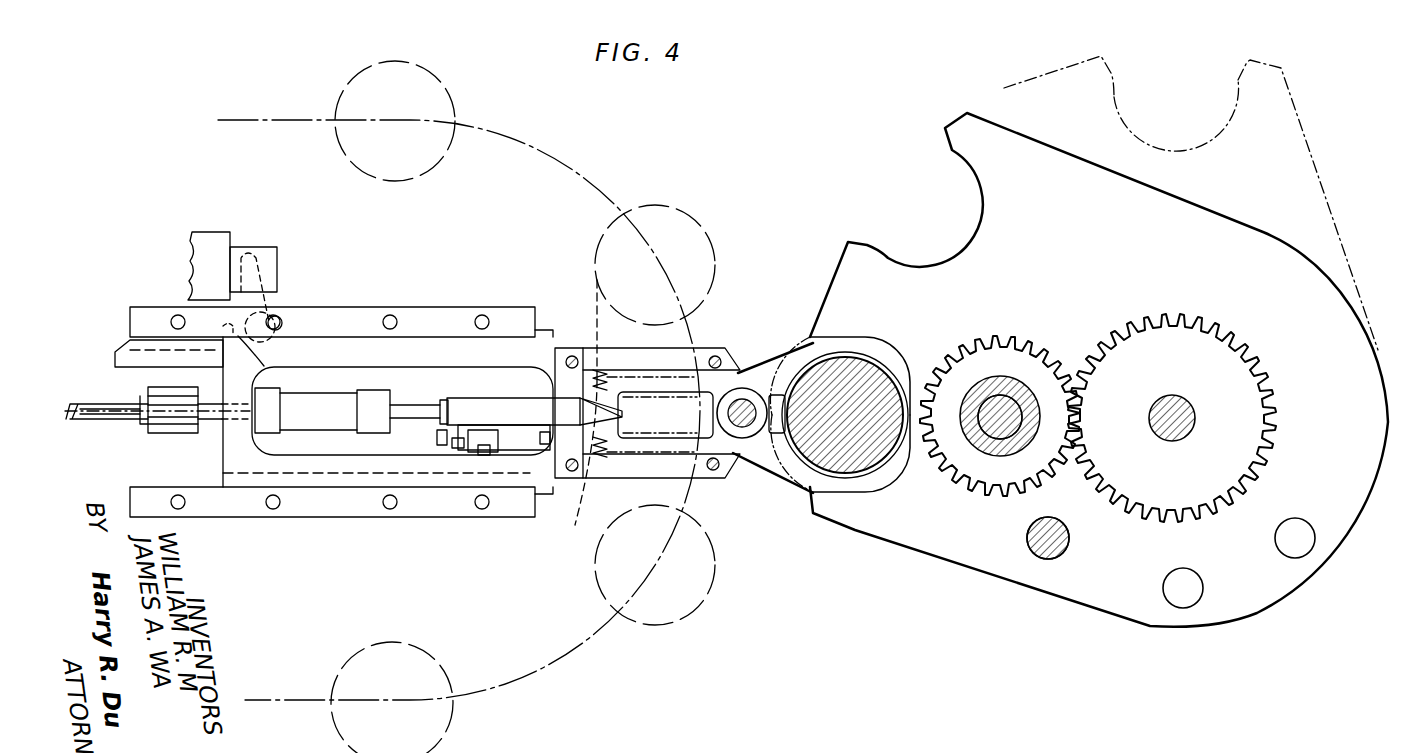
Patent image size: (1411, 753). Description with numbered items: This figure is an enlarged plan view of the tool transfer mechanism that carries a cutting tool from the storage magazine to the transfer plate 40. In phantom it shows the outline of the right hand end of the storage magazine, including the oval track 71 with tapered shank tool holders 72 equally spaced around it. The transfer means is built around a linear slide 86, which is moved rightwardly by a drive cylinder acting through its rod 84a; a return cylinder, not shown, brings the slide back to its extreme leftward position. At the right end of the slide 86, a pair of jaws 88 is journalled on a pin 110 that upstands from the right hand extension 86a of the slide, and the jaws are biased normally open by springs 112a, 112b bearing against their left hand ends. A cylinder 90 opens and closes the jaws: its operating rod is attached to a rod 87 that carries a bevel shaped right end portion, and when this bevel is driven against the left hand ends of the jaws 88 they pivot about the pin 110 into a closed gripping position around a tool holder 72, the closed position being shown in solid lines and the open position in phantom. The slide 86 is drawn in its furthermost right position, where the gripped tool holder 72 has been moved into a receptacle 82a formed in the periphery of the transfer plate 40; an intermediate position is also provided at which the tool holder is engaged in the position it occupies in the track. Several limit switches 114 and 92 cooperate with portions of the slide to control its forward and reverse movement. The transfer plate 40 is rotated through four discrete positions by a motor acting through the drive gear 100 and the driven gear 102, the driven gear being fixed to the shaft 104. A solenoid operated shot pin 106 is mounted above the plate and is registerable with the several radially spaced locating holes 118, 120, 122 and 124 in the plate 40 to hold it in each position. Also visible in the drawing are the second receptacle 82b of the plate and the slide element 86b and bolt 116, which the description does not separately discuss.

The transfer plate 40 is at (1292, 156).
The track 71 is at (286, 120).
The tapered shank tool holder 72 is at (440, 94).
The receptacle 82a is at (805, 493).
The upper roller housing half / notch 82b is at (888, 258).
The rod 84a is at (116, 413).
The slide 86 is at (370, 487).
The right hand extension 86a is at (692, 348).
The lower bracket 86b is at (536, 437).
The rod 87 is at (467, 400).
The jaws 88 is at (785, 360).
The cylinder 90 is at (334, 395).
The limit switch 92 is at (213, 240).
The drive gear 100 is at (1003, 338).
The driven gear 102 is at (1195, 379).
The shaft 104 is at (1172, 441).
The shot pin 106 is at (1037, 543).
The pin 110 is at (742, 400).
The spring 112a is at (575, 330).
The spring 112b is at (581, 458).
The limit switch 114 is at (487, 455).
The bolt 116 is at (455, 455).
The locating hole 118 is at (985, 463).
The locating hole 120 is at (1045, 560).
The locating hole 122 is at (1177, 600).
The locating hole 124 is at (1297, 560).